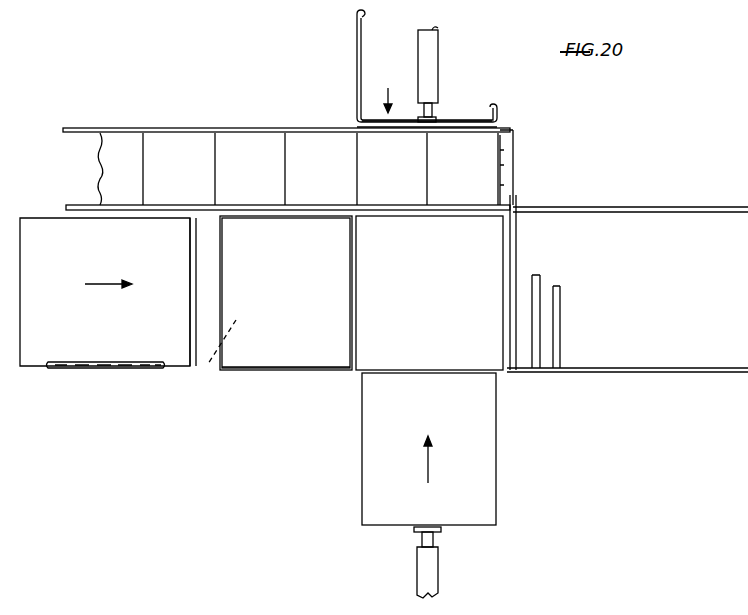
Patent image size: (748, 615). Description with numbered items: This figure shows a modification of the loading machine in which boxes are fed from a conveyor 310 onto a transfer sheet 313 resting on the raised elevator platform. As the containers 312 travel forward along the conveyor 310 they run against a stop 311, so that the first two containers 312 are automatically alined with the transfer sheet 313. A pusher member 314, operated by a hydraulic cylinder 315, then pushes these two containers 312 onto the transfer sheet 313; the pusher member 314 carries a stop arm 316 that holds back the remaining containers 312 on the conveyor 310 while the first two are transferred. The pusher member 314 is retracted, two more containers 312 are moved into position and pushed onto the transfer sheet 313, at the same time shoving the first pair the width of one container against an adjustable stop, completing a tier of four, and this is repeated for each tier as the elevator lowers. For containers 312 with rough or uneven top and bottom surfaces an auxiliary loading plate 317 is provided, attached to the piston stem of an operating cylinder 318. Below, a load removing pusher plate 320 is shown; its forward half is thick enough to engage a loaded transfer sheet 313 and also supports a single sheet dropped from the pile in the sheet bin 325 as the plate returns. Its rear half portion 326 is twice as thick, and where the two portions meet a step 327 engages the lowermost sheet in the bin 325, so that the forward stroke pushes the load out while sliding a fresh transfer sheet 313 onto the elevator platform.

The conveyor 310 is at (93, 128).
The stop 311 is at (515, 165).
The containers 312 is at (320, 169).
The transfer sheet 313 is at (368, 282).
The pusher member 314 is at (468, 120).
The hydraulic cylinder 315 is at (440, 52).
The stop arm 316 is at (357, 80).
The auxiliary loading plate 317 is at (429, 449).
The operating cylinder 318 is at (434, 560).
The load removing pusher plate 320 is at (207, 366).
The sheet bin 325 is at (273, 372).
The rear half portion 326 is at (105, 293).
The step 327 is at (188, 254).